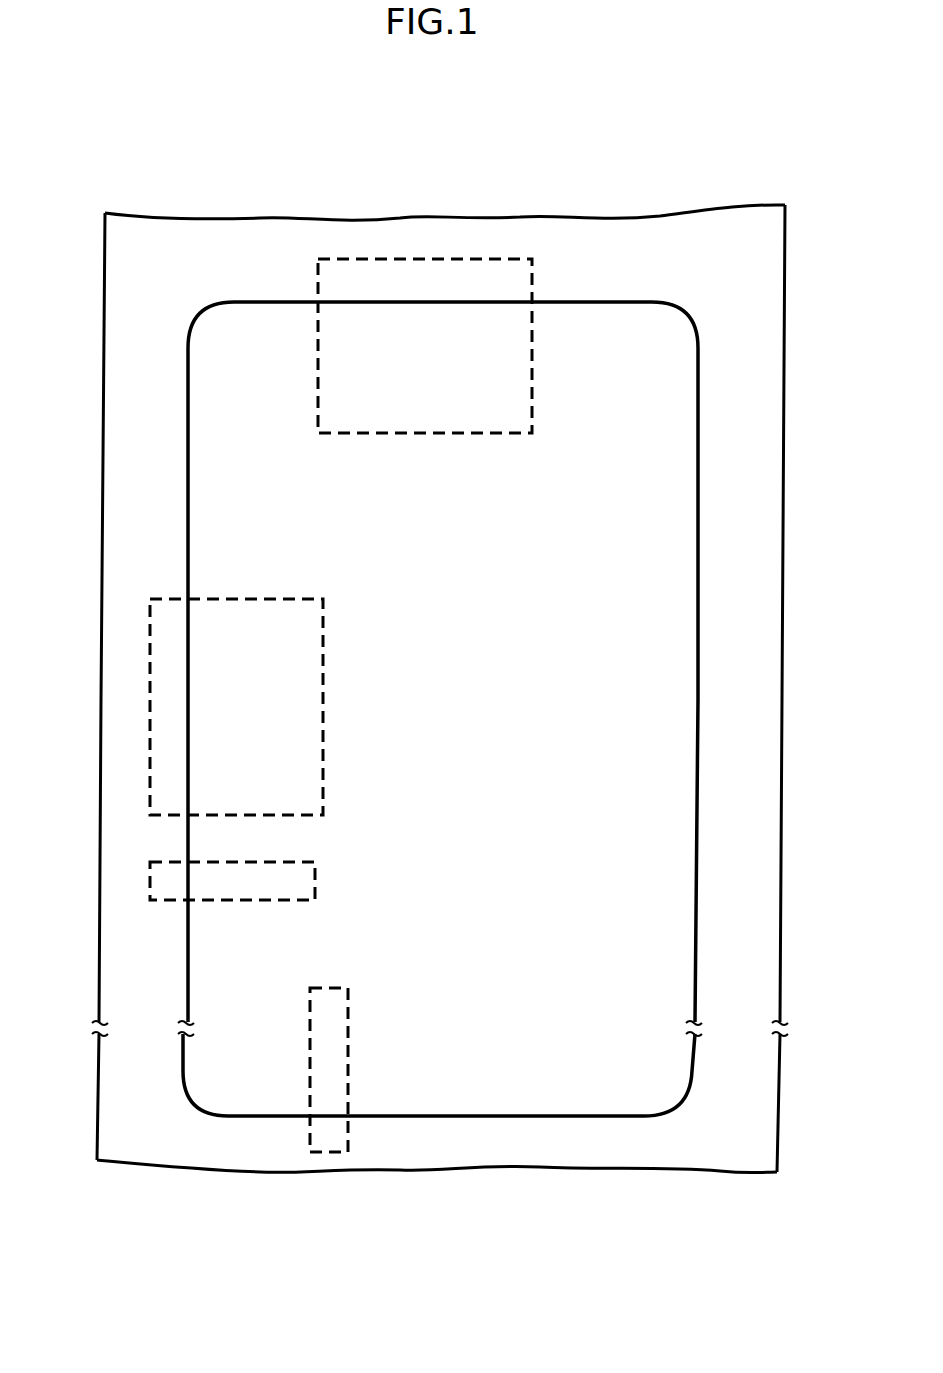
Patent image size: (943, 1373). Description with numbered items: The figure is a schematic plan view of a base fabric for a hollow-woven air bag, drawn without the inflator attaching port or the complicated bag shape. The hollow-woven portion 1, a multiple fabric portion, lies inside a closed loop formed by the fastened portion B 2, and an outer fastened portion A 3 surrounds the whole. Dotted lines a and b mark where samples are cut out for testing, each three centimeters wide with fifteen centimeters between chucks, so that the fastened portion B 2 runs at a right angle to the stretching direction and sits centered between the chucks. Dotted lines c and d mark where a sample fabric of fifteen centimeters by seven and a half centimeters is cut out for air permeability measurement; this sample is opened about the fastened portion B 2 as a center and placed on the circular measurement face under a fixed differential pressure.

The hollow-woven portion 1 is at (672, 584).
The fastened portion B 2 is at (697, 682).
The fastened portion A 3 is at (747, 785).
The dotted line a is at (150, 884).
The dotted line b is at (310, 1135).
The dotted line c is at (150, 670).
The dotted line d is at (447, 259).